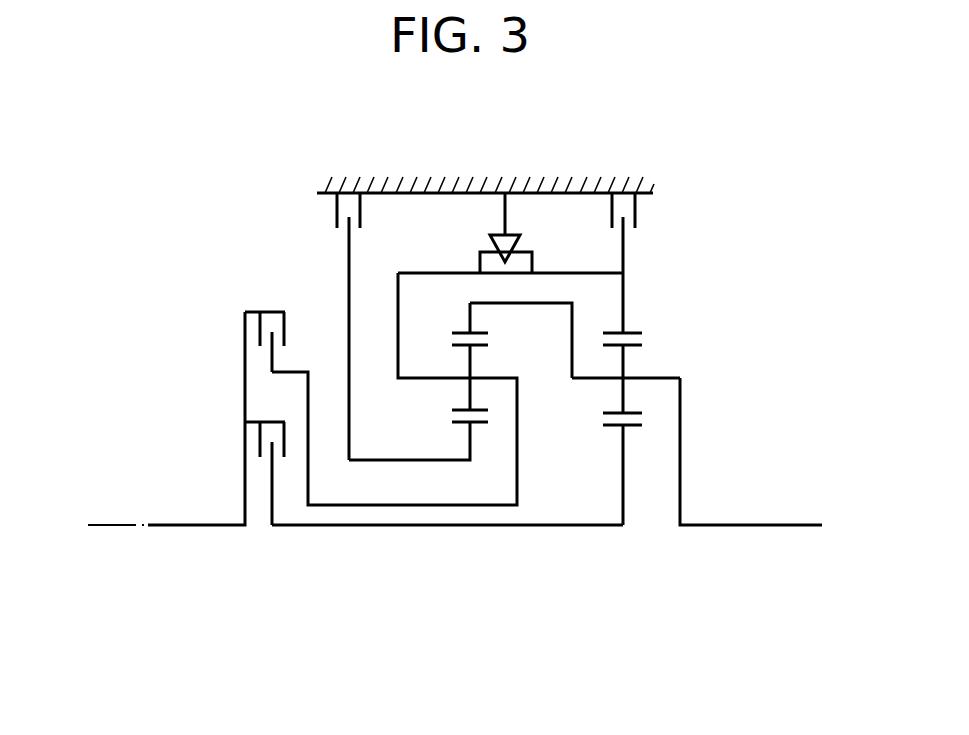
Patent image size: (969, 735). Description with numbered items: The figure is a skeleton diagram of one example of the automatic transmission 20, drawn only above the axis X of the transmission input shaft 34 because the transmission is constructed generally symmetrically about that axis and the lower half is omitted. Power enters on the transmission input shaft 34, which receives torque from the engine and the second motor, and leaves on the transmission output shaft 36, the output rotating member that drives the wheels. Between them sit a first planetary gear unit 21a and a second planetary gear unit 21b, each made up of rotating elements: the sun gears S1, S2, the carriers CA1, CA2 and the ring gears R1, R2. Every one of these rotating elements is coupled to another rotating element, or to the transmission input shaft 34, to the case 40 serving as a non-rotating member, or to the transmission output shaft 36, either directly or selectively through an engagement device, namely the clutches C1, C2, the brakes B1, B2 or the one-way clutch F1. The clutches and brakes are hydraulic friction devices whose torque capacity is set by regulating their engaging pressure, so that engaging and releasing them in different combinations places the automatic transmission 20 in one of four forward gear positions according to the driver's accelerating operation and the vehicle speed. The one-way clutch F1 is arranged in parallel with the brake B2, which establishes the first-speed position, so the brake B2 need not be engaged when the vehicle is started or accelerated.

The automatic transmission 20 is at (562, 124).
The case 40 is at (585, 186).
The brake B1 is at (327, 326).
The brake B2 is at (647, 263).
The one-way clutch F1 is at (510, 233).
The clutch C1 is at (268, 457).
The clutch C2 is at (268, 325).
The ring gear R1 is at (468, 330).
The carrier CA1 is at (443, 380).
The sun gear S1 is at (467, 427).
The ring gear R2 is at (627, 332).
The carrier CA2 is at (665, 377).
The sun gear S2 is at (625, 430).
The axis X is at (108, 522).
The transmission input shaft 34 is at (220, 522).
The transmission output shaft 36 is at (722, 524).
The first planetary gear unit 21a is at (465, 536).
The second planetary gear unit 21b is at (620, 536).